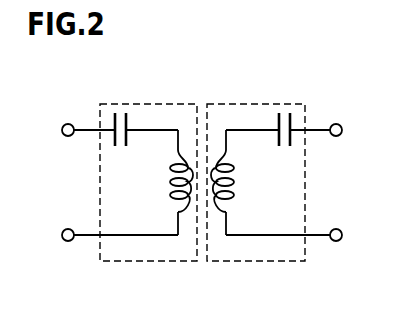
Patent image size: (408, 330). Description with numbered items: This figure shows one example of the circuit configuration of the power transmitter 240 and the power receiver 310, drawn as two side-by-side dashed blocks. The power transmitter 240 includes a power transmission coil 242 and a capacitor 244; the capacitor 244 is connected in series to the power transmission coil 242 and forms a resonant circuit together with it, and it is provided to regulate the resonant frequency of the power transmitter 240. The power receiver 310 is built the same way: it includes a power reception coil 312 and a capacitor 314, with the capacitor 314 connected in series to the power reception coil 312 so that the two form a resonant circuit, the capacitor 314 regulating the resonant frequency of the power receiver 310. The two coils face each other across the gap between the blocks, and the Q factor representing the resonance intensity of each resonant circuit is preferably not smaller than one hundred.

The power transmitter 240 is at (172, 104).
The capacitor 244 is at (127, 118).
The power transmission coil 242 is at (180, 197).
The power receiver 310 is at (231, 104).
The capacitor 314 is at (277, 118).
The power reception coil 312 is at (224, 197).